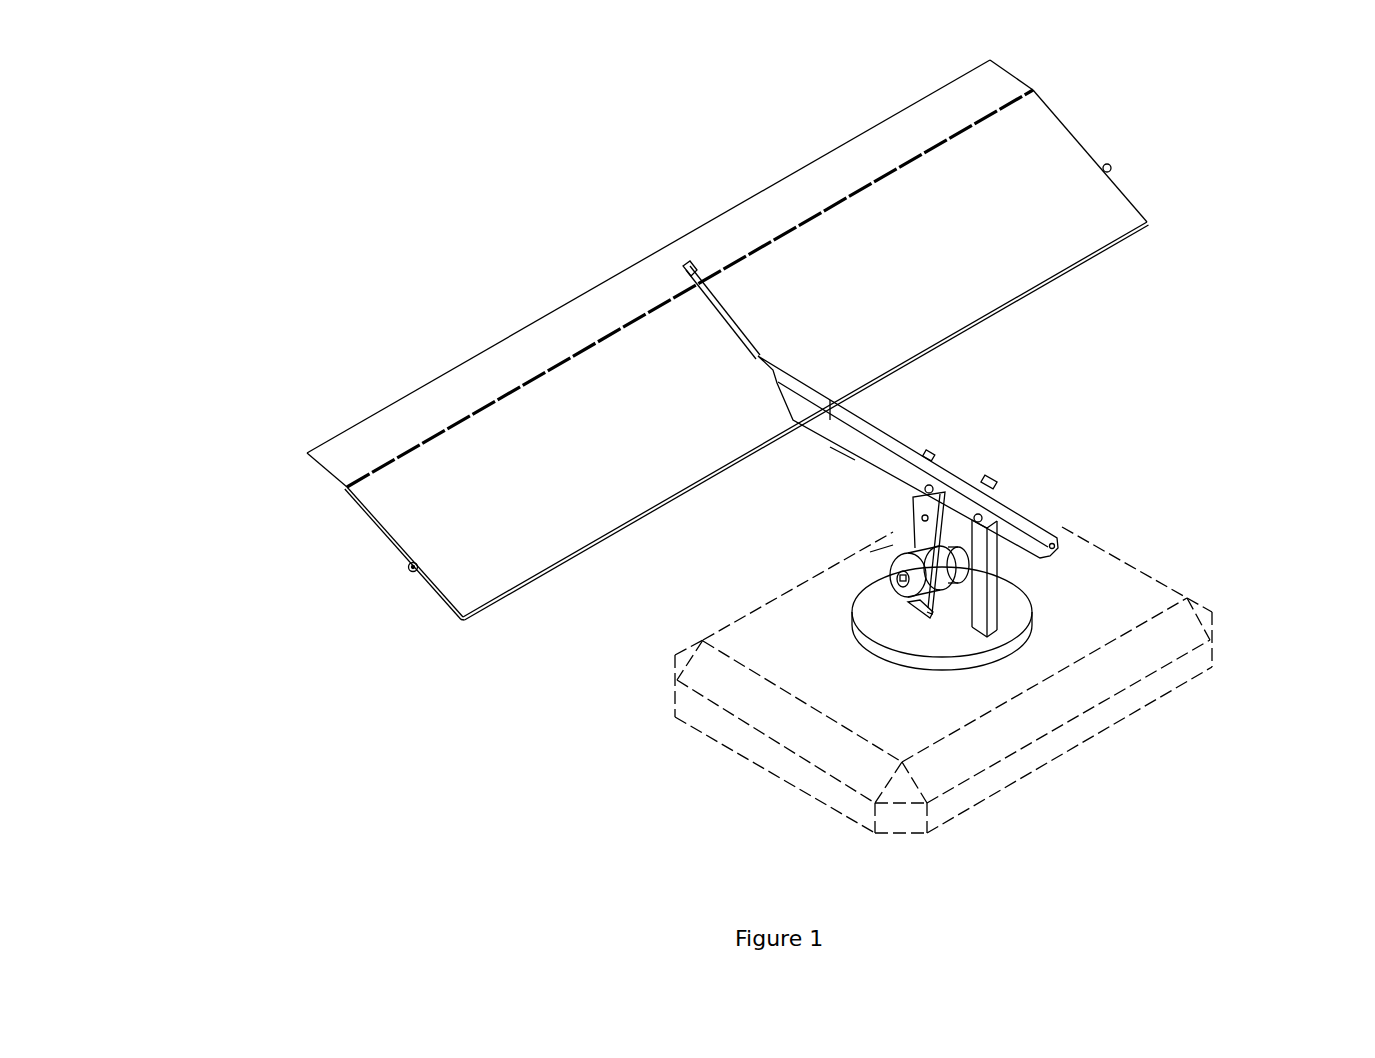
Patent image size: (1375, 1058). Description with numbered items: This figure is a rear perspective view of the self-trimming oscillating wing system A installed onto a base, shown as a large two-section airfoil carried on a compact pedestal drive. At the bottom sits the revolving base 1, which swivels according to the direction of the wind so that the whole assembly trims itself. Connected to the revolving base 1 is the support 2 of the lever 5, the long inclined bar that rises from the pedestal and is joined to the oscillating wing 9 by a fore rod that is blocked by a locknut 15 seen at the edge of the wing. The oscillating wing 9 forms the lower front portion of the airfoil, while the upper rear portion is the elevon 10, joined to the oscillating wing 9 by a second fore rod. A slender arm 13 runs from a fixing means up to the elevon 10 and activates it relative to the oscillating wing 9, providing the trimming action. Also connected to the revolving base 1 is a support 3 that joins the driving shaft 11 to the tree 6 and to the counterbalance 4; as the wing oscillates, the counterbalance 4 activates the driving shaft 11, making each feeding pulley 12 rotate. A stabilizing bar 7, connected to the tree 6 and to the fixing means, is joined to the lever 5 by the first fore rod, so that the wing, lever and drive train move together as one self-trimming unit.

The self-trimming oscillating wing system A is at (660, 418).
The revolving base 1 is at (1107, 696).
The support of lever 2 is at (1167, 639).
The support of driving shaft 3 is at (854, 734).
The counterbalance 4 is at (992, 676).
The lever 5 is at (1060, 457).
The tree 6 is at (621, 706).
The stabilizing bar 7 is at (518, 657).
The oscillating wing 9 is at (663, 434).
The elevon 10 is at (602, 273).
The driving shaft 11 is at (778, 710).
The feeding pulley 12 is at (743, 707).
The arm activating the elevon 13 is at (463, 291).
The first locknut 15 is at (296, 601).